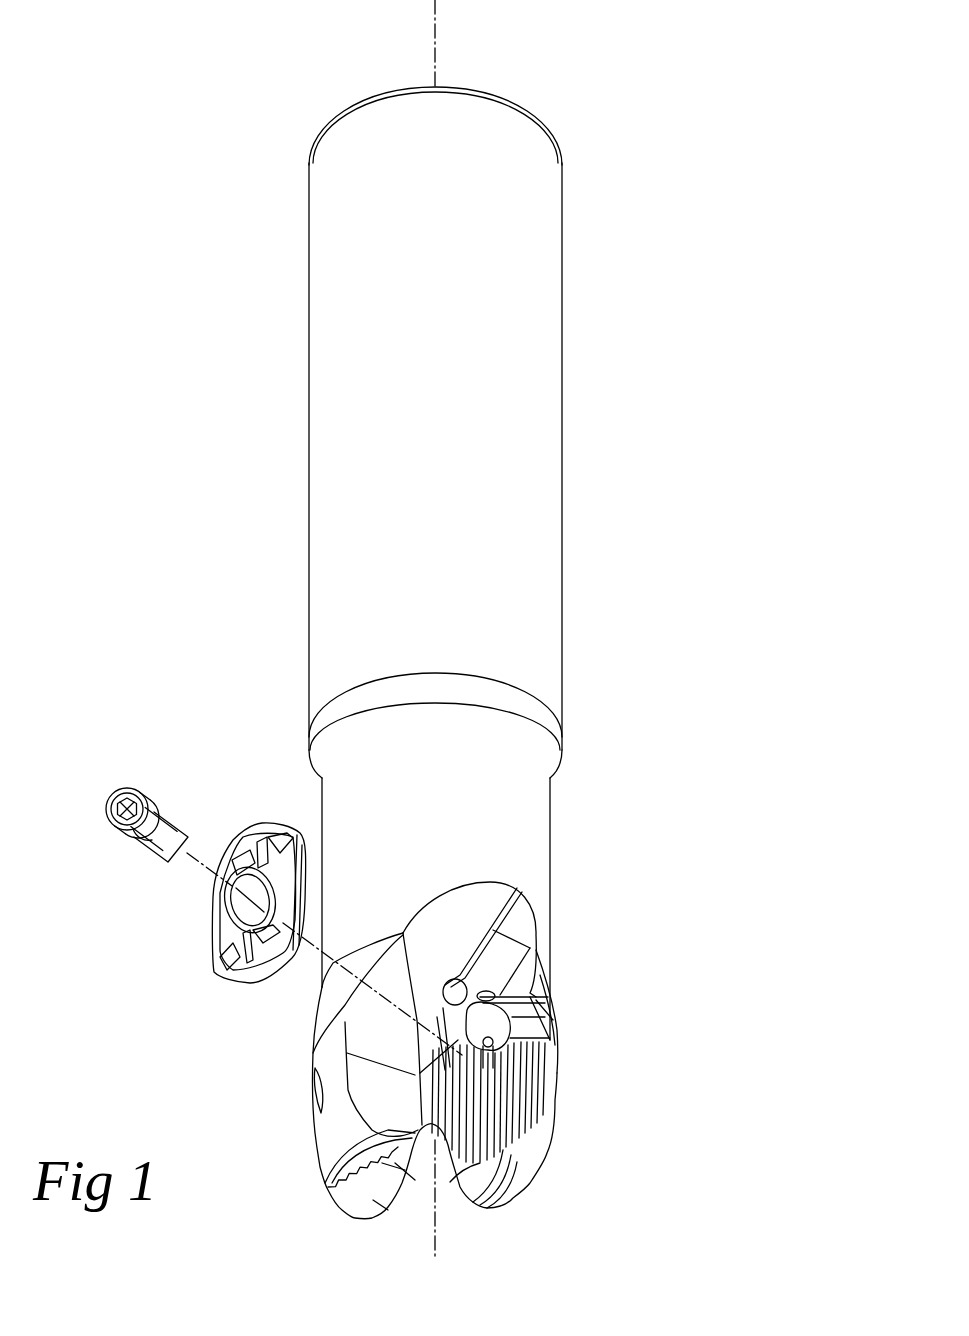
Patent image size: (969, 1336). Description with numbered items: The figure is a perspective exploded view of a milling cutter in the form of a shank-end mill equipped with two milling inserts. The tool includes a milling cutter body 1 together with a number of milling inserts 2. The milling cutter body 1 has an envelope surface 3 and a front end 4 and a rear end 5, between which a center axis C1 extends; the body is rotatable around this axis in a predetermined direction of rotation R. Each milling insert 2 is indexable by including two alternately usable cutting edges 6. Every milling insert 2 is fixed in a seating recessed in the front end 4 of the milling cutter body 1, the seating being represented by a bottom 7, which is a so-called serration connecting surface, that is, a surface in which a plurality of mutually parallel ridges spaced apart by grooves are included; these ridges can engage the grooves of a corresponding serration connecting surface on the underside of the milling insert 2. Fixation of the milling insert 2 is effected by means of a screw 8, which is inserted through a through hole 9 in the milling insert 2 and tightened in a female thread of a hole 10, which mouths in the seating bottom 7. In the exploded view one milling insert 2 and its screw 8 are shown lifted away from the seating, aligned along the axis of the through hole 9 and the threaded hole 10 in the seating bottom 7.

The milling cutter body 1 is at (273, 355).
The milling insert 2 is at (302, 990).
The envelope surface 3 is at (458, 818).
The front end 4 is at (473, 1075).
The rear end 5 is at (560, 117).
The cutting edge 6 is at (290, 895).
The bottom 7 is at (515, 1132).
The screw 8 is at (133, 787).
The through hole 9 is at (237, 902).
The hole 10 is at (513, 1087).
The center axis C1 is at (437, 42).
The direction of rotation R is at (475, 553).